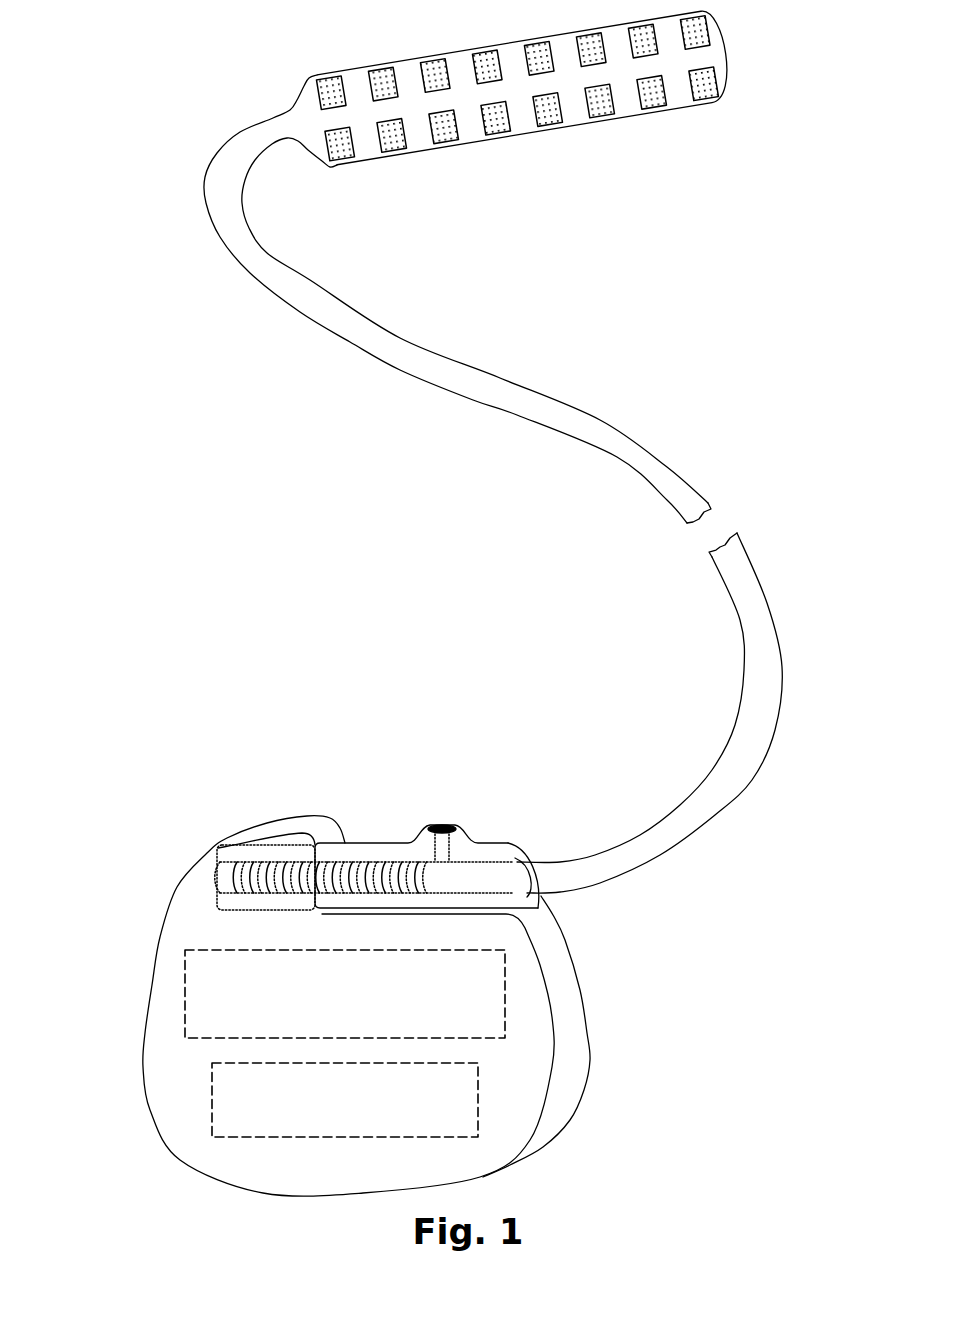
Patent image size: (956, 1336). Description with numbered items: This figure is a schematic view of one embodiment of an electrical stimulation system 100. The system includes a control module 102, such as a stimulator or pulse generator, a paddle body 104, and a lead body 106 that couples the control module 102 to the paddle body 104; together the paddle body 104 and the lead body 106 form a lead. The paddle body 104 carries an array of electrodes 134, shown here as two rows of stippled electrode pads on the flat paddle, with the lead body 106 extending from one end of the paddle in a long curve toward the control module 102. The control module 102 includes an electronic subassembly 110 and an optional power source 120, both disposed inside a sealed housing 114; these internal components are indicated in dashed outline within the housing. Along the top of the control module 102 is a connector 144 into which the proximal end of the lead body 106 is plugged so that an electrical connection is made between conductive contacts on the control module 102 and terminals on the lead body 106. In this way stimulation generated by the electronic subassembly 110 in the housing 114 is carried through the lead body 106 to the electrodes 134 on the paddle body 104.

The electrical stimulation system 100 is at (649, 378).
The control module 102 is at (192, 823).
The paddle body 104 is at (713, 53).
The lead body 106 is at (517, 383).
The electronic subassembly 110 is at (200, 988).
The sealed housing 114 is at (200, 926).
The power source 120 is at (222, 1097).
The electrodes 134 is at (522, 110).
The connector 144 is at (383, 843).